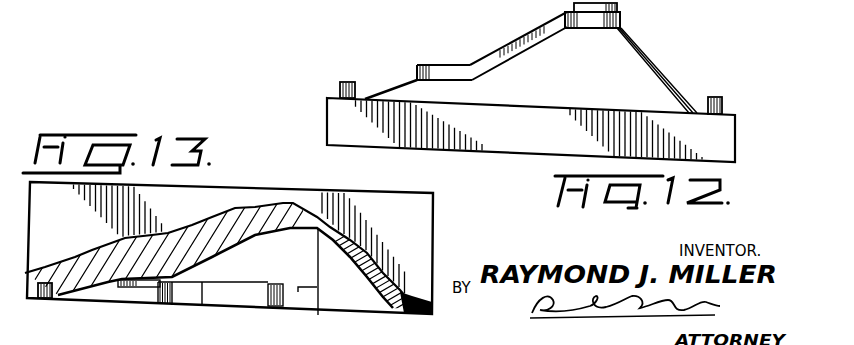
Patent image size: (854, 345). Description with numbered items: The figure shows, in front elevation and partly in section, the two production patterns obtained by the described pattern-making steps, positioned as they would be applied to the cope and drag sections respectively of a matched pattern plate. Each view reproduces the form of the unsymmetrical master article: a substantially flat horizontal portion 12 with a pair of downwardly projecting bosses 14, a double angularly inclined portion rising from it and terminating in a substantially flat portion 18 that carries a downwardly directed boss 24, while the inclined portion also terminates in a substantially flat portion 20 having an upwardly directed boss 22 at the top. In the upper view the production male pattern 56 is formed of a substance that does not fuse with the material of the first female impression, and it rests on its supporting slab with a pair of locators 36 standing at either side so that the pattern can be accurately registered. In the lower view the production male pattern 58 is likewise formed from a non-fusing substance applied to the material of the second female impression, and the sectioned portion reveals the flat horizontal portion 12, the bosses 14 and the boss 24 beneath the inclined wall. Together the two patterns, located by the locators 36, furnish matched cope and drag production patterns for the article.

In FIG. 13, the flat horizontal portion 12 is at (225, 286).
In FIG. 13, the downwardly projecting bosses 14 is at (188, 293).
In FIG. 12, the flat portion 18 is at (449, 70).
In FIG. 12, the flat portion 20 is at (617, 25).
In FIG. 12, the upwardly directed boss 22 is at (621, 9).
In FIG. 13, the downwardly directed boss 24 is at (135, 287).
In FIG. 12, the locators 36 is at (340, 83).
In FIG. 12, the production male pattern 56 is at (642, 74).
In FIG. 13, the production male pattern 58 is at (305, 267).